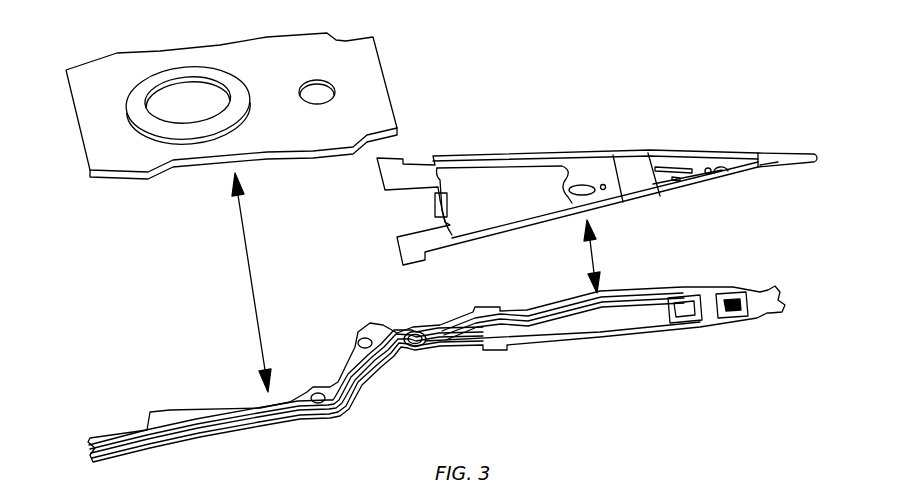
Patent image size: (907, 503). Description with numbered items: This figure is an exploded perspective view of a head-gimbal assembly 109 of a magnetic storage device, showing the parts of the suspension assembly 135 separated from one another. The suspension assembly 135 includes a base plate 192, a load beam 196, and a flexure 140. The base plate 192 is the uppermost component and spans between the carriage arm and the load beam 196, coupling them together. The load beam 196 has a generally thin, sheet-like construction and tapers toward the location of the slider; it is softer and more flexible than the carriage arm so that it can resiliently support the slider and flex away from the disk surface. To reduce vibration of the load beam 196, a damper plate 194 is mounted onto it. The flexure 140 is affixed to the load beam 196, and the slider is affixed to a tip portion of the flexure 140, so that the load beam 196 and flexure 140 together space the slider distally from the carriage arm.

The head suspension assembly 109 is at (475, 272).
The suspension assembly 135 is at (597, 183).
The flexure 140 is at (165, 417).
The base plate 192 is at (365, 63).
The damper plate 194 is at (493, 185).
The load beam 196 is at (583, 170).